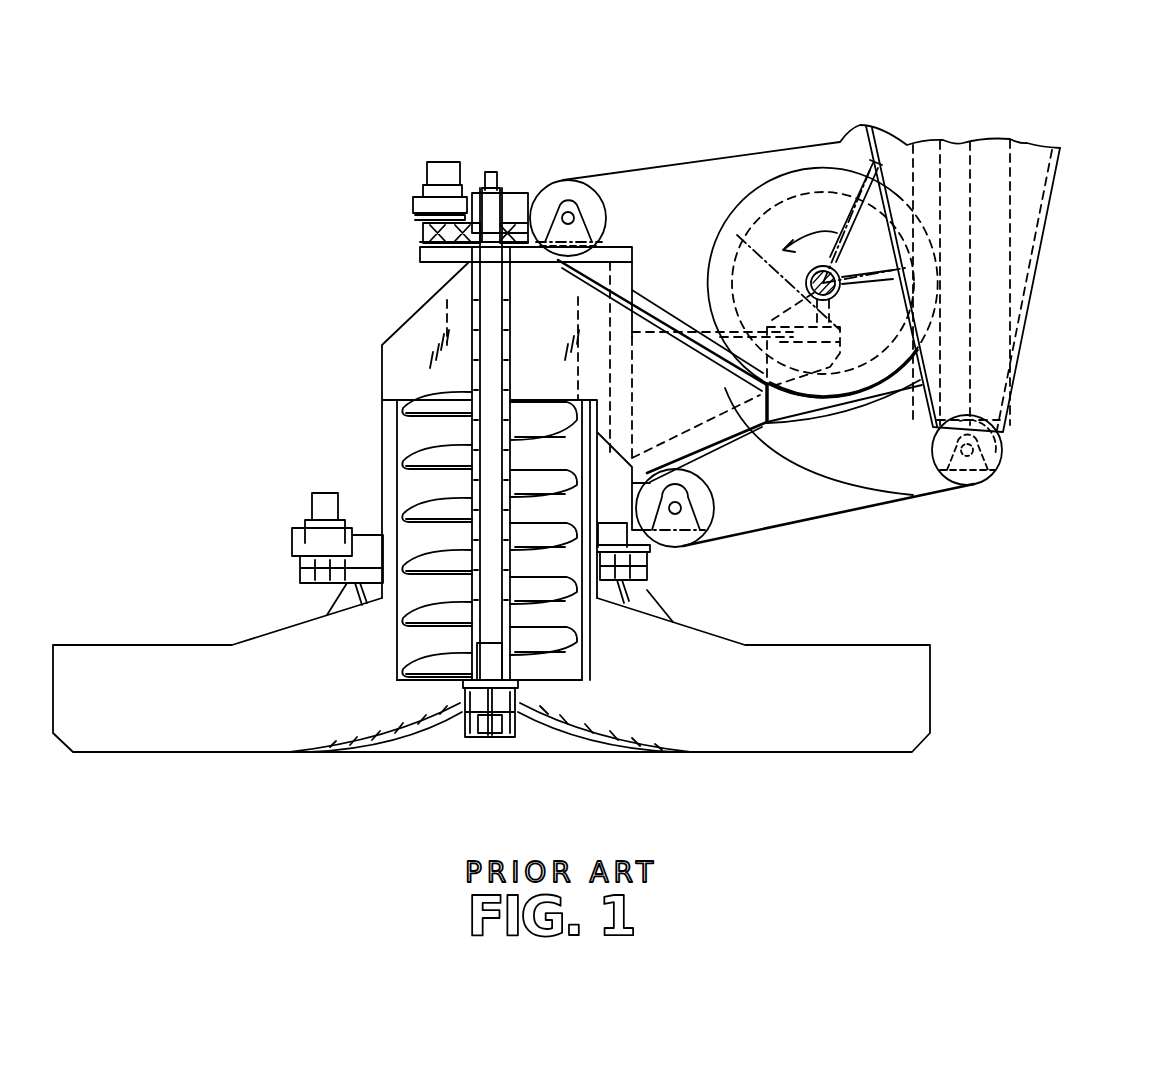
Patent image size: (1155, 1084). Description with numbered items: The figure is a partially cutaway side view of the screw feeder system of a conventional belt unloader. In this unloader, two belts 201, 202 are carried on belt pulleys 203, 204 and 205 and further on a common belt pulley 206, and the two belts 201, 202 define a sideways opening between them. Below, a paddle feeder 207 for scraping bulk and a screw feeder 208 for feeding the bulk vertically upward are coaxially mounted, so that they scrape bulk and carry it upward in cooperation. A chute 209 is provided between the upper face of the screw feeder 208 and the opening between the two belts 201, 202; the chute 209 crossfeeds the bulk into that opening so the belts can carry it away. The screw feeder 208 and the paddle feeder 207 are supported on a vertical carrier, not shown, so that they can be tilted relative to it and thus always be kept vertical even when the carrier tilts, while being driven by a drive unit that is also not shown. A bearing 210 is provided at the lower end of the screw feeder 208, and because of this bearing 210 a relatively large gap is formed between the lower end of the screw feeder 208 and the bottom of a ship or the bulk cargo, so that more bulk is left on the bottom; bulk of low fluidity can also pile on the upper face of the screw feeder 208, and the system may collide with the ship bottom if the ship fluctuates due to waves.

The belt 201 is at (867, 510).
The belt 202 is at (710, 157).
The belt pulley 203 is at (988, 462).
The belt pulley 204 is at (705, 512).
The belt pulley 205 is at (558, 190).
The common belt pulley 206 is at (800, 182).
The paddle feeder 207 is at (265, 610).
The screw feeder 208 is at (577, 640).
The chute 209 is at (913, 495).
The bearing 210 is at (530, 740).